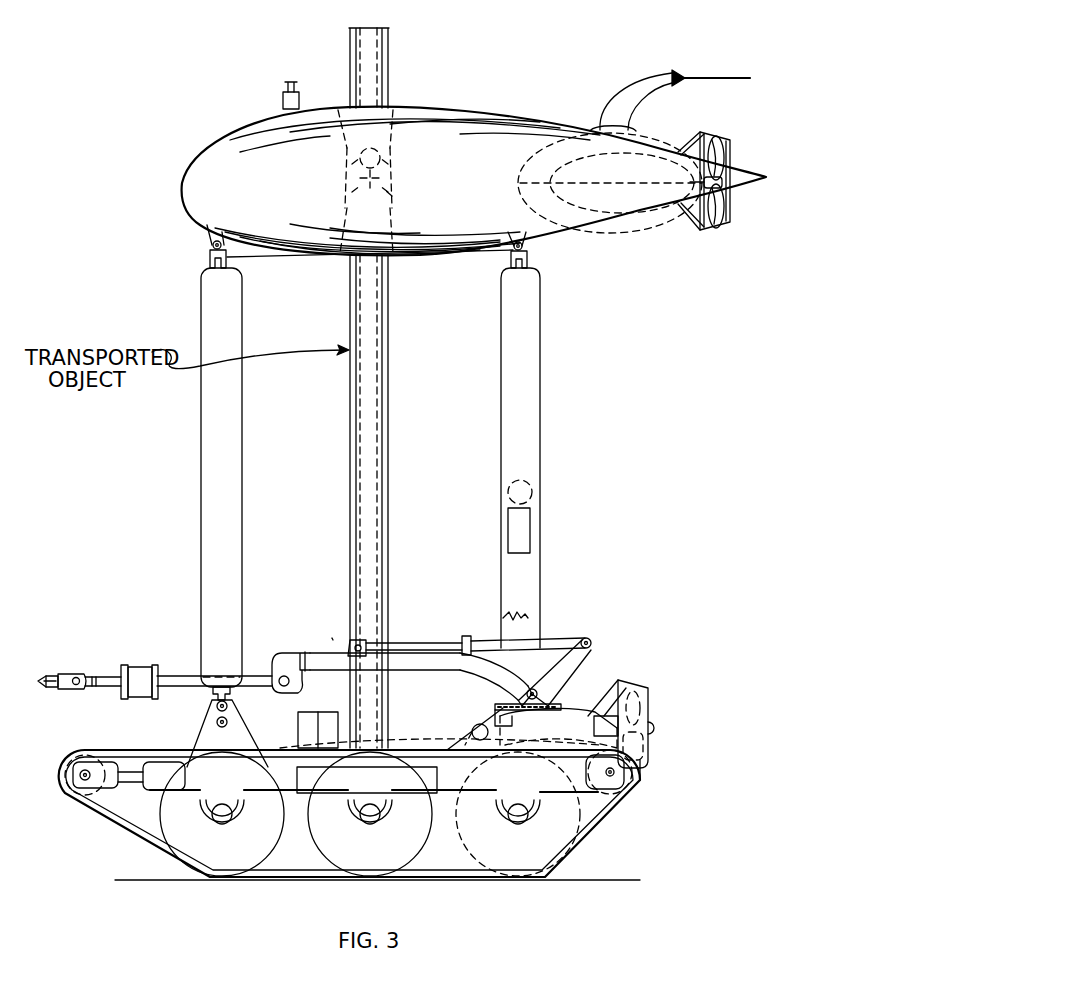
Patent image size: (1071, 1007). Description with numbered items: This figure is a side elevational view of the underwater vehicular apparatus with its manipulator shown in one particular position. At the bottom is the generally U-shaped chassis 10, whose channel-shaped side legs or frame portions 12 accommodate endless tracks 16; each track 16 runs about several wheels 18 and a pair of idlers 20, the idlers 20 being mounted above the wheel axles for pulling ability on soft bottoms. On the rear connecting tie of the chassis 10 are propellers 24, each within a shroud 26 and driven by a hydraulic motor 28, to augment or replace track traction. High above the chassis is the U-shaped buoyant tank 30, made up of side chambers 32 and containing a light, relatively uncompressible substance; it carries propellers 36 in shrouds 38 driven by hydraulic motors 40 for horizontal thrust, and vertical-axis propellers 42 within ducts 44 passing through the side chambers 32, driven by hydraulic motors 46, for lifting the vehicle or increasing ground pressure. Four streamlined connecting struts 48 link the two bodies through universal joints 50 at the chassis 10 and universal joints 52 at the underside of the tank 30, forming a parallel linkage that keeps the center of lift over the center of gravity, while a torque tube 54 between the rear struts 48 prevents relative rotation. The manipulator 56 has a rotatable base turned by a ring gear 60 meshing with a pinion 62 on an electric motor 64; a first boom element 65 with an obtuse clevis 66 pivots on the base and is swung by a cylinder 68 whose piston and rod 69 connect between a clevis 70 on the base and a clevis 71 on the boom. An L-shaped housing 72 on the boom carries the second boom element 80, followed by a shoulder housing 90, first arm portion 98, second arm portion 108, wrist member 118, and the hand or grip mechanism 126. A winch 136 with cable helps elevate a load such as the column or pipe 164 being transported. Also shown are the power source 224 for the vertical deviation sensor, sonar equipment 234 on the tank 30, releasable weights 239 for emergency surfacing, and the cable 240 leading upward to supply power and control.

The chassis 10 is at (626, 802).
The side legs or frame portions 12 is at (272, 768).
The endless tracks 16 is at (126, 832).
The wheels 18 is at (268, 832).
The idlers 20 is at (98, 790).
The propellers 24 is at (648, 704).
The shroud 26 is at (648, 770).
The hydraulic motor 28 is at (606, 706).
The buoyant tank 30 is at (183, 152).
The side chambers 32 is at (486, 130).
The propellers 36 is at (732, 200).
The shrouds 38 is at (706, 134).
The hydraulic motor 40 is at (692, 170).
The propellers 42 is at (392, 196).
The ducts 44 is at (397, 388).
The hydraulic motors 46 is at (382, 135).
The connecting struts 48 is at (242, 474).
The universal joints 50 is at (228, 704).
The universal joints 52 is at (210, 262).
The torque tube 54 is at (536, 494).
The manipulator 56 is at (329, 640).
The ring gear 60 is at (558, 712).
The pinion 62 is at (494, 710).
The electric motor 64 is at (500, 712).
The first boom element 65 is at (386, 664).
The obtuse clevis 66 is at (490, 672).
The cylinder 68 is at (484, 642).
The piston and rod 69 is at (404, 643).
The clevis 70 is at (586, 656).
The clevis 71 is at (360, 640).
The L-shaped housing 72 is at (278, 660).
The second boom element 80 is at (198, 686).
The shoulder housing 90 is at (146, 690).
The first arm portion 98 is at (98, 688).
The second arm portion 108 is at (72, 672).
The wrist member 118 is at (62, 690).
The hand or grip mechanism 126 is at (46, 672).
The winch 136 is at (474, 732).
The column or pipe 164 is at (374, 392).
The power source 224 is at (516, 532).
The sonar equipment 234 is at (280, 105).
The releasable weights 239 is at (312, 772).
The cable 240 is at (700, 72).